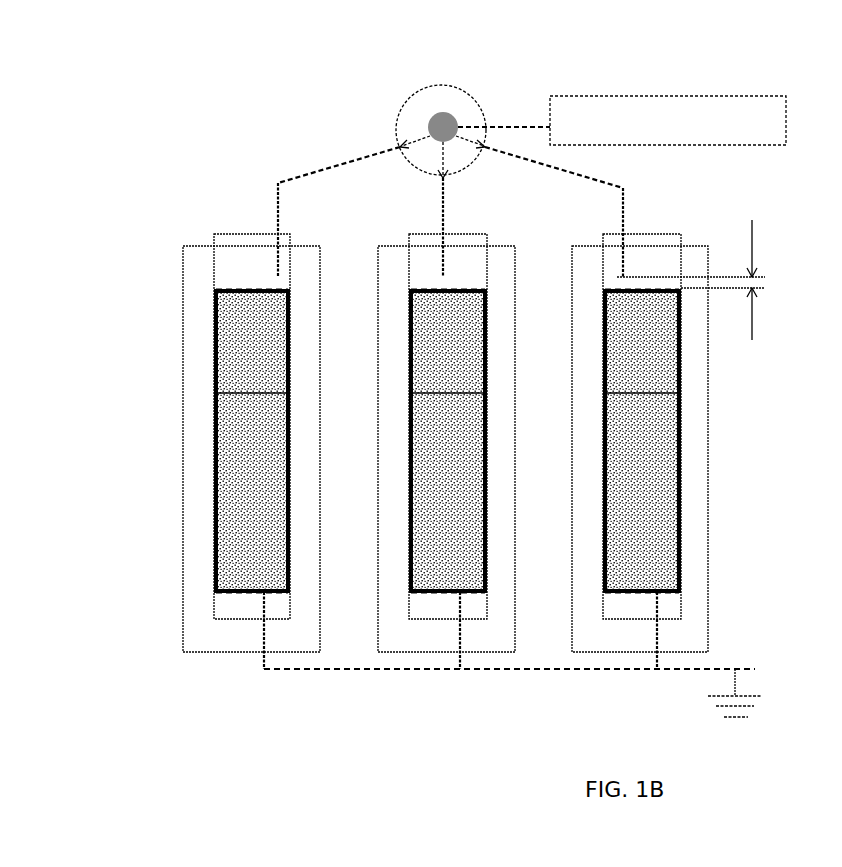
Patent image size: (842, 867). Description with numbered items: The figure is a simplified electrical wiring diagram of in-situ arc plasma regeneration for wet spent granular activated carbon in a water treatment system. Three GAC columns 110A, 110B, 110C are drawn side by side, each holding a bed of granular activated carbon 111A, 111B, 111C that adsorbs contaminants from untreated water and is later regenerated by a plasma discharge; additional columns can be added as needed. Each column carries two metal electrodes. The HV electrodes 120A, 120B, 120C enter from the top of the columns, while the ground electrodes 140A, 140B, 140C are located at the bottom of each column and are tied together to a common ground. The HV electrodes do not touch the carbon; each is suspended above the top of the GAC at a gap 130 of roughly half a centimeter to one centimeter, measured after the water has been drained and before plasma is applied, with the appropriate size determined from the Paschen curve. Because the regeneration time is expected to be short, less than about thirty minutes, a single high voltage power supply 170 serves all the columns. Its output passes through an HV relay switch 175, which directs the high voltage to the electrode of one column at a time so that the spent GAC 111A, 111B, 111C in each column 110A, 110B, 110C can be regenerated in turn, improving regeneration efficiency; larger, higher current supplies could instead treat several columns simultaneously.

The high voltage power supply 170 is at (694, 95).
The HV relay switch 175 is at (396, 122).
The HV electrode 120A is at (277, 232).
The HV electrode 120B is at (437, 225).
The HV electrode 120C is at (619, 228).
The GAC column 110A is at (214, 465).
The GAC column 110B is at (408, 462).
The GAC column 110C is at (603, 465).
The granular activated carbon 111A is at (252, 383).
The granular activated carbon 111B is at (448, 383).
The granular activated carbon 111C is at (642, 383).
The ground electrode 140A is at (235, 592).
The ground electrode 140B is at (436, 592).
The ground electrode 140C is at (630, 592).
The gap 130 is at (708, 280).